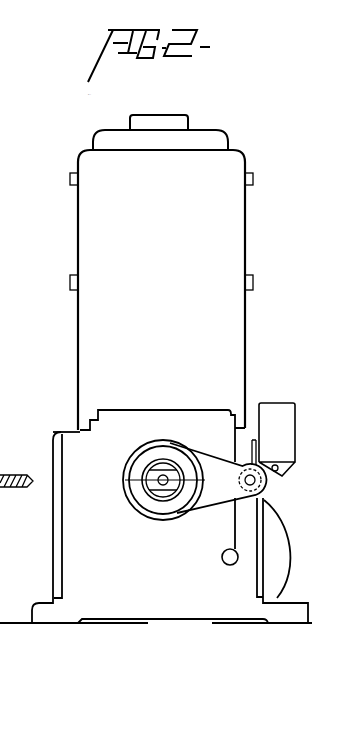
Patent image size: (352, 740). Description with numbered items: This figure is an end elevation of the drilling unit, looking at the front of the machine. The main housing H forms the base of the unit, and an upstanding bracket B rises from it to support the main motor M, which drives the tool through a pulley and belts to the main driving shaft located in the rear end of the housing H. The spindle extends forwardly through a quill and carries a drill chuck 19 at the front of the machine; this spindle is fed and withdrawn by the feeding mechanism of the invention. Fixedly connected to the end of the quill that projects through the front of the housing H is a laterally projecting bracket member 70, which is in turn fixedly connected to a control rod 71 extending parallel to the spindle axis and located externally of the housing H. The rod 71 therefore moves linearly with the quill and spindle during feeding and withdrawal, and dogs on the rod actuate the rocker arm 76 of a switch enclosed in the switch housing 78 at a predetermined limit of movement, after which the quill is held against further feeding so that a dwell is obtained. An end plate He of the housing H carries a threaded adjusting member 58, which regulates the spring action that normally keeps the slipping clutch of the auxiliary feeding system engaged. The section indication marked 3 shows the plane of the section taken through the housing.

The main motor M is at (217, 137).
The upstanding bracket B is at (235, 232).
The main housing H is at (62, 431).
The end plate He is at (75, 555).
The drill chuck 19 is at (155, 497).
The bracket member 70 is at (203, 498).
The control rod 71 is at (262, 484).
The rocker arm 76 is at (258, 461).
The switch housing 78 is at (278, 427).
The threaded adjusting member 58 is at (222, 563).
The section line 3- 3 is at (95, 485).